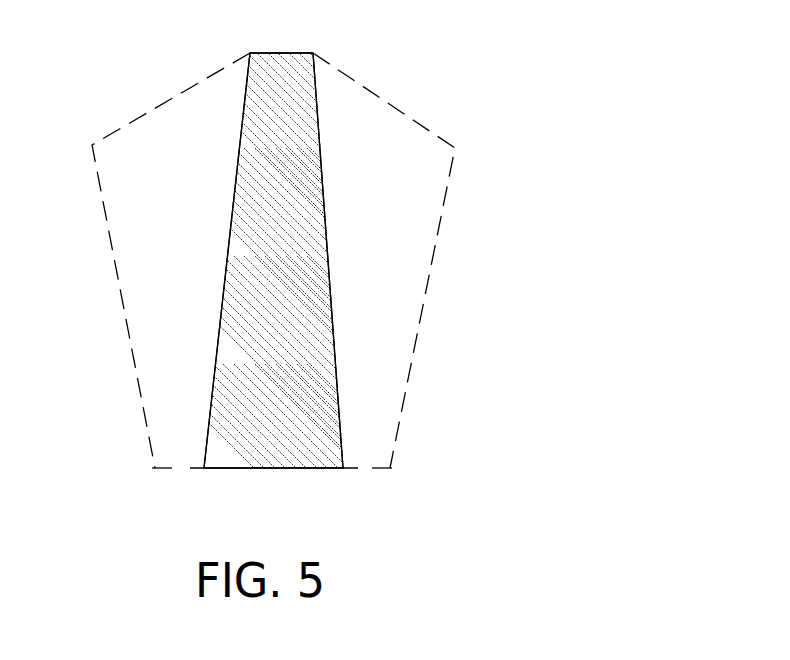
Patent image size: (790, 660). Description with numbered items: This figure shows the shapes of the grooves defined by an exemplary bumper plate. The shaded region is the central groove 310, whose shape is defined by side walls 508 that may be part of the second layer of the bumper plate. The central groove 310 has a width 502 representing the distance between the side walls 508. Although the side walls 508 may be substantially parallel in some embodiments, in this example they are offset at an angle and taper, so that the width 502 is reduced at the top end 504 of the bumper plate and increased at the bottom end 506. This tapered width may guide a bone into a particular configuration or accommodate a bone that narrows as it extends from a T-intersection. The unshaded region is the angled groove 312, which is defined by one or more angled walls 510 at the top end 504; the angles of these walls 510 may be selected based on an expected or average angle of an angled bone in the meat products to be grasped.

The central groove 310 is at (453, 350).
The angled groove 312 is at (264, 201).
The width 502 is at (332, 292).
The top end 504 is at (278, 53).
The bottom end 506 is at (277, 468).
The side walls 508 is at (322, 162).
The angled walls 510 is at (147, 112).